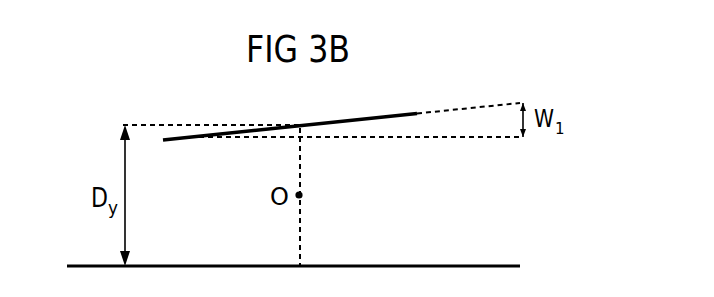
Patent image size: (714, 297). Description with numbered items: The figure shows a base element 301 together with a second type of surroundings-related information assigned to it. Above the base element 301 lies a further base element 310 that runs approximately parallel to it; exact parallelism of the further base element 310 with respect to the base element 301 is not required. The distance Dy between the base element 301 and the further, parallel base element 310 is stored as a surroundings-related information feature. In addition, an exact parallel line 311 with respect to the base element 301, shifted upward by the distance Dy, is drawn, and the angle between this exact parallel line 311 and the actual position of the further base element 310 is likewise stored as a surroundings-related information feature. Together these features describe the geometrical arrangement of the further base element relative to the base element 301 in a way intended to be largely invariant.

The base element 301 is at (462, 265).
The further base element 310 is at (185, 139).
The exact parallel line 311 is at (373, 138).